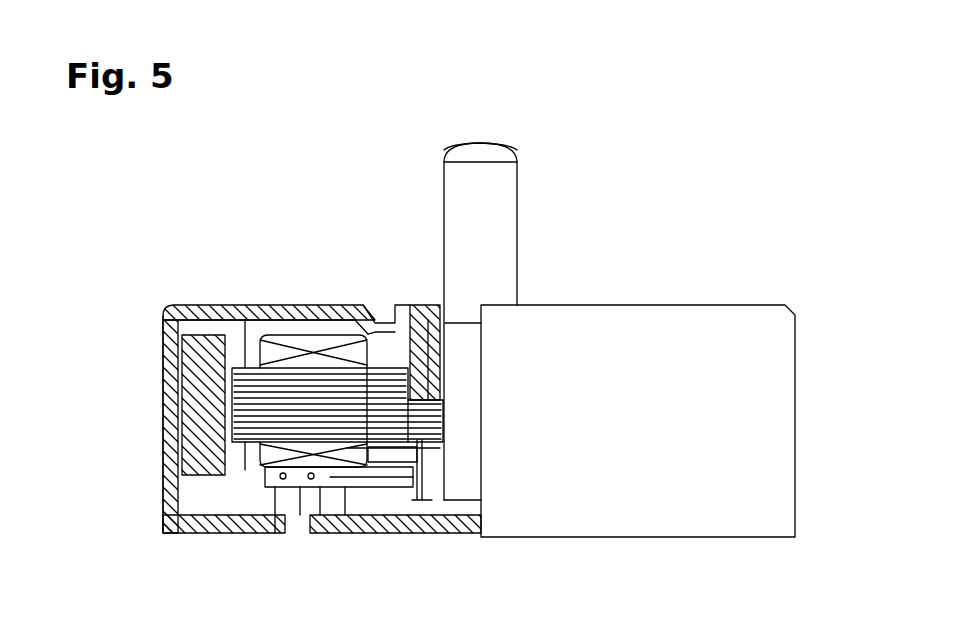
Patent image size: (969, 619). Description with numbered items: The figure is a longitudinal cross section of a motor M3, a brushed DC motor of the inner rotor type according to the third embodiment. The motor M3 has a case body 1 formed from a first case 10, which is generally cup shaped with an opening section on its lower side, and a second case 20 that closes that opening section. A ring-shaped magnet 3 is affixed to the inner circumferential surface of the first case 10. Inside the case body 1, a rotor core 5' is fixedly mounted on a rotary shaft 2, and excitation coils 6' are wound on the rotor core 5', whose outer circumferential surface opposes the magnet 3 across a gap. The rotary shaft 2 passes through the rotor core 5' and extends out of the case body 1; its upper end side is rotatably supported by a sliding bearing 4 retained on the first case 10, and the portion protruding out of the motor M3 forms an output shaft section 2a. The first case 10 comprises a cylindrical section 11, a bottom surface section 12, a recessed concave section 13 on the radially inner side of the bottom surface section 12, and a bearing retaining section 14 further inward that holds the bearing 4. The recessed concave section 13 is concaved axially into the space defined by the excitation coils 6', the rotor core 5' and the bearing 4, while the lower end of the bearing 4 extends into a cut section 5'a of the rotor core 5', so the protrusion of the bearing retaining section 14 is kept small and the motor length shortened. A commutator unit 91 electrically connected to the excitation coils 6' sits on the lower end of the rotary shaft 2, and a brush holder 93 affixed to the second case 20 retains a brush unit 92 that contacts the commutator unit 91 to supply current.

The case body 1 is at (97, 488).
The rotary shaft 2 is at (460, 387).
The output shaft section 2a is at (520, 218).
The magnet 3 is at (183, 348).
The sliding bearing 4 is at (446, 323).
The rotor core 5' is at (337, 335).
The cut section 5'a is at (485, 424).
The excitation coils 6' is at (306, 349).
The first case 10 is at (165, 483).
The cylindrical section 11 is at (165, 402).
The bottom surface section 12 is at (195, 303).
The recessed concave section 13 is at (368, 320).
The bearing retaining section 14 is at (405, 305).
The second case 20 is at (213, 510).
The commutator unit 91 is at (432, 490).
The brush unit 92 is at (337, 479).
The brush holder 93 is at (297, 508).
The motor M3 is at (682, 252).